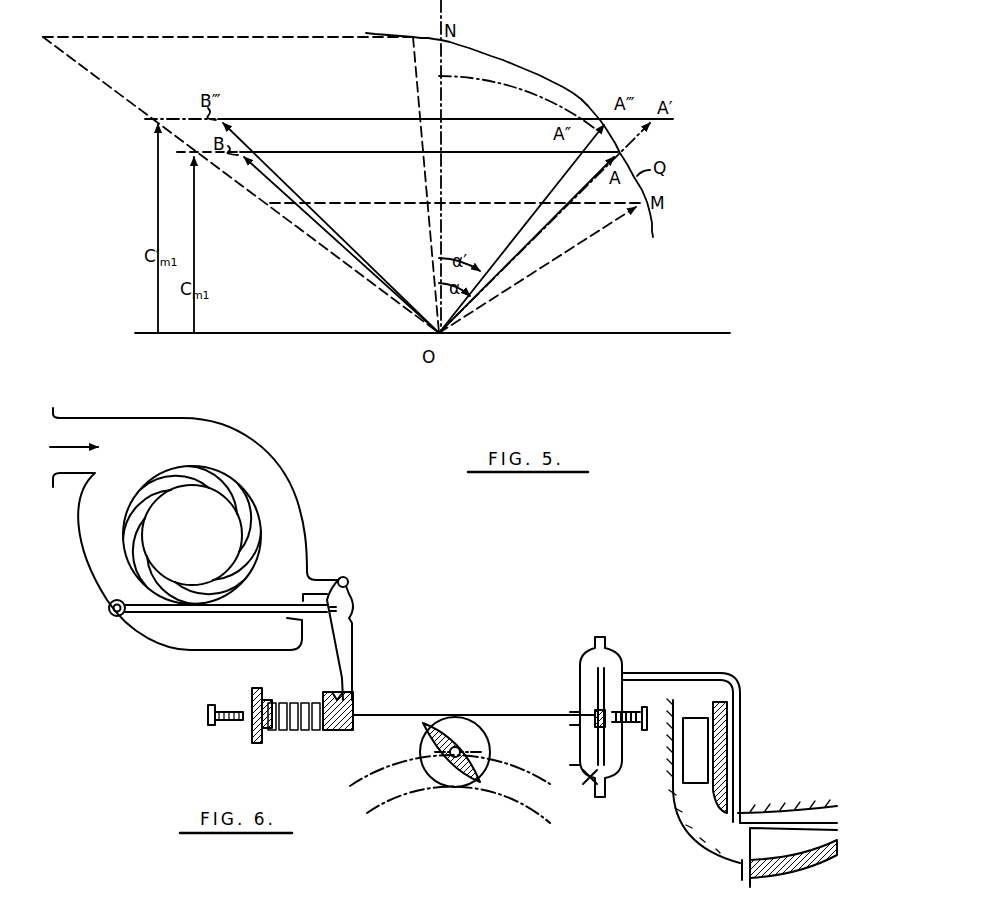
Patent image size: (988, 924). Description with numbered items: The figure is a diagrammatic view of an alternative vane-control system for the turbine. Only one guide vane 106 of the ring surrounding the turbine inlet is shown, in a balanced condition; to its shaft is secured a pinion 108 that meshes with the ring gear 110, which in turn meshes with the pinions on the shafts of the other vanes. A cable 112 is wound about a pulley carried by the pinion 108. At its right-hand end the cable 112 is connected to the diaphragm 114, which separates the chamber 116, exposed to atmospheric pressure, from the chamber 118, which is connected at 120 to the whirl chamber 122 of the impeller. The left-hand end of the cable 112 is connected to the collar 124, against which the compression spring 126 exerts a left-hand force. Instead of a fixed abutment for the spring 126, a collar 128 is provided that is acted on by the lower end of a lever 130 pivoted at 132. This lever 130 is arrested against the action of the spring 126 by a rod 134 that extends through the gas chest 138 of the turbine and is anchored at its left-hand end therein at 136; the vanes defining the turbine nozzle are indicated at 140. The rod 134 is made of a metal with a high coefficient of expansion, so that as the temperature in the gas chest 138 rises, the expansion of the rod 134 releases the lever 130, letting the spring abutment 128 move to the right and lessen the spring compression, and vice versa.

The guide vane 106 is at (450, 737).
The pinion 108 is at (490, 740).
The ring gear 110 is at (505, 797).
The cable 112 is at (530, 714).
The diaphragm 114 is at (582, 690).
The chamber 116 is at (595, 770).
The chamber 118 is at (618, 773).
The connection 120 is at (672, 675).
The whirl chamber 122 is at (715, 843).
The collar 124 is at (252, 728).
The compression spring 126 is at (282, 697).
The collar 128 is at (338, 731).
The lever 130 is at (355, 652).
The pivot 132 is at (348, 582).
The rod 134 is at (258, 603).
The anchor 136 is at (111, 614).
The gas chest 138 is at (293, 508).
The vanes 140 is at (197, 472).